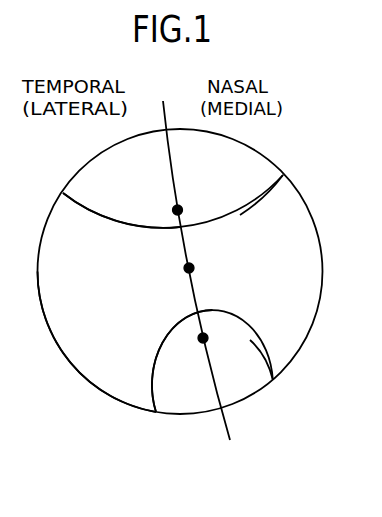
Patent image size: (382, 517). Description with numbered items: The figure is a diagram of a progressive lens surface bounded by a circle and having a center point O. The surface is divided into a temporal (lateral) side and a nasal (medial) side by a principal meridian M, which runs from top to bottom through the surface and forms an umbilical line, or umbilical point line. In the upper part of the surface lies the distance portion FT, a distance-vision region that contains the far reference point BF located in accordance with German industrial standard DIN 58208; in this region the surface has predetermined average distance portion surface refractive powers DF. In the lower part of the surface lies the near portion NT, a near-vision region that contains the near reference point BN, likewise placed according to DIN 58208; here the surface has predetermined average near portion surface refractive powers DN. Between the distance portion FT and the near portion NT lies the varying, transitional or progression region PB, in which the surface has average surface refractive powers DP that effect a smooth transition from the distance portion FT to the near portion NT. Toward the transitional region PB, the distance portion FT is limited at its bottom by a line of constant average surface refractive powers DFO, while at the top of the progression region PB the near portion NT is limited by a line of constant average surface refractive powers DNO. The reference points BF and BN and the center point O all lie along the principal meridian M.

The principal meridian M is at (196, 271).
The distance portion FT is at (173, 186).
The average distance portion surface refractive powers DF is at (124, 167).
The line of constant average surface refractive powers DFO is at (300, 153).
The far reference point BF is at (187, 206).
The center point O is at (184, 265).
The average surface refractive powers DP is at (106, 255).
The progression region PB is at (180, 271).
The near reference point BN is at (192, 341).
The near portion NT is at (212, 361).
The average near portion surface refractive powers DN is at (179, 369).
The line of constant average surface refractive powers DNO is at (283, 383).